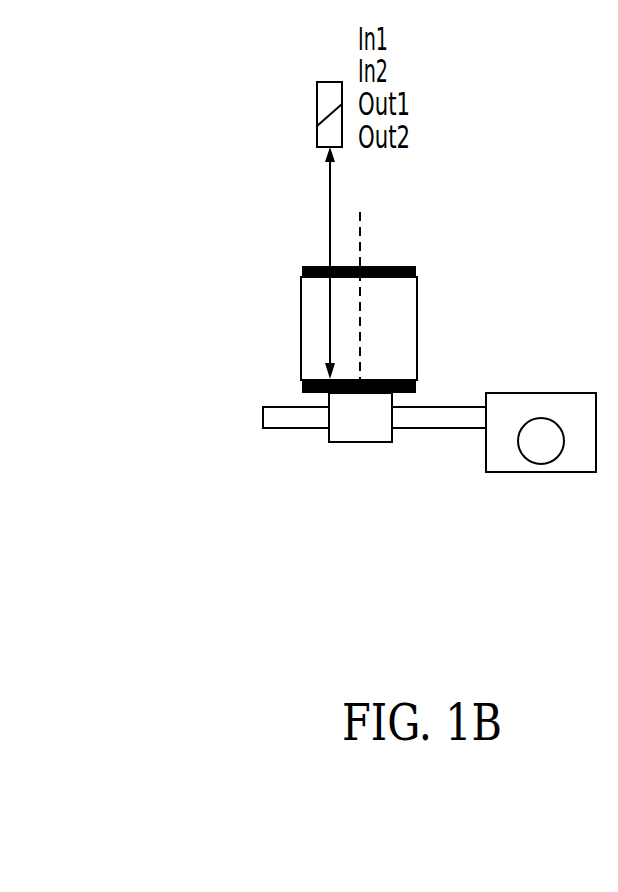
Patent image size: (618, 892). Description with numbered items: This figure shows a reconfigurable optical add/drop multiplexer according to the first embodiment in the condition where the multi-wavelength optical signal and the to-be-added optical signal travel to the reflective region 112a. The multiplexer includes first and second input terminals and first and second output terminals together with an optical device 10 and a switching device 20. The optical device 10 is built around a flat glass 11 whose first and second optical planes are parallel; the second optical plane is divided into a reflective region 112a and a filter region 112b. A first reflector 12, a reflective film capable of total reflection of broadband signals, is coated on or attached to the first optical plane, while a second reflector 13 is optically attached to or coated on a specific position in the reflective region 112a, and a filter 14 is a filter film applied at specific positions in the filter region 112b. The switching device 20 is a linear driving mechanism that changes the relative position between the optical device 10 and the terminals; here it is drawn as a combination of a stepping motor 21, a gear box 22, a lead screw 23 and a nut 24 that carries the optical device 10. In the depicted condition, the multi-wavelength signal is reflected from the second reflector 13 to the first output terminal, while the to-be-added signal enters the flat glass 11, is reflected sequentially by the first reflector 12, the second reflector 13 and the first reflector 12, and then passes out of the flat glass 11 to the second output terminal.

The optical device 10 is at (212, 242).
The flat glass 11 is at (306, 326).
The first reflector 12 is at (300, 392).
The second reflector 13 is at (304, 268).
The filter 14 is at (364, 267).
The switching device 20 is at (512, 553).
The stepping motor 21 is at (538, 455).
The gear box 22 is at (492, 449).
The lead screw 23 is at (440, 422).
The nut 24 is at (360, 432).
The reflective region 112a is at (310, 263).
The filter region 112b is at (385, 302).